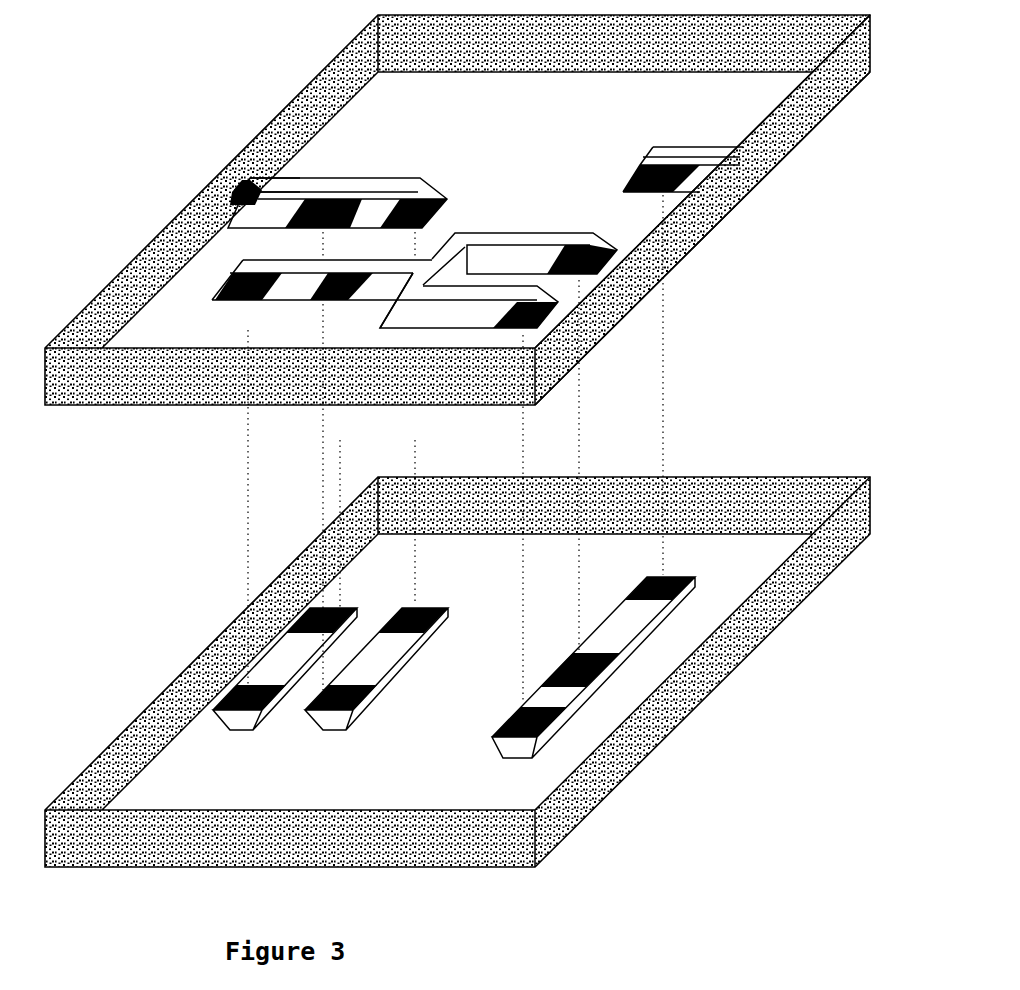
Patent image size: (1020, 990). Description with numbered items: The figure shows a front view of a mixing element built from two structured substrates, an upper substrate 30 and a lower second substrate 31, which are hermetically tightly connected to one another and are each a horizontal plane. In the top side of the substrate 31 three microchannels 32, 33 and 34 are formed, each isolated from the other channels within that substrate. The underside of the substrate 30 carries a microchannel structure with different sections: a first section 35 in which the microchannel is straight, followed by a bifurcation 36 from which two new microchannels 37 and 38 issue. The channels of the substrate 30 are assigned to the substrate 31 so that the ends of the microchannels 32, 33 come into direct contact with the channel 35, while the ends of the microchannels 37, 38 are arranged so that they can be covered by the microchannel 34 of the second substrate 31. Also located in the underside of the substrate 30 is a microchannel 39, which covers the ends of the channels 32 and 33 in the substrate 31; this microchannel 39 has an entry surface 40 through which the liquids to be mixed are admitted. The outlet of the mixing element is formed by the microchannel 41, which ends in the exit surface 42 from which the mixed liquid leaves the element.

The substrate 30 is at (710, 220).
The second substrate 31 is at (723, 650).
The microchannel 32 is at (285, 657).
The microchannel 33 is at (363, 667).
The microchannel 34 is at (568, 705).
The first section 35 is at (297, 283).
The bifurcation 36 is at (415, 177).
The microchannel 37 is at (583, 240).
The microchannel 38 is at (545, 313).
The microchannel 39 is at (265, 175).
The entry surface 40 is at (230, 203).
The microchannel 41 is at (690, 150).
The exit surface 42 is at (760, 180).